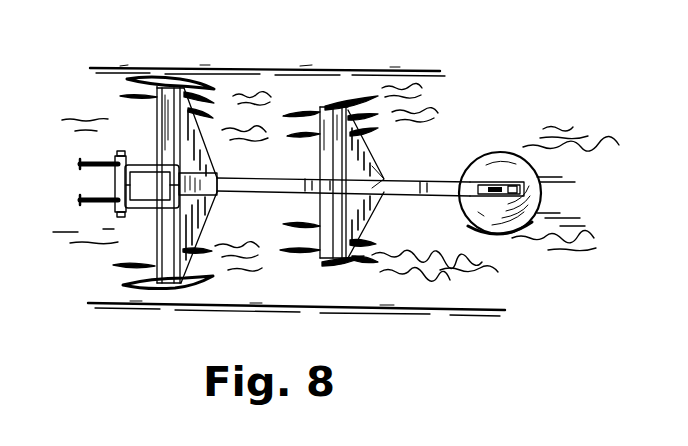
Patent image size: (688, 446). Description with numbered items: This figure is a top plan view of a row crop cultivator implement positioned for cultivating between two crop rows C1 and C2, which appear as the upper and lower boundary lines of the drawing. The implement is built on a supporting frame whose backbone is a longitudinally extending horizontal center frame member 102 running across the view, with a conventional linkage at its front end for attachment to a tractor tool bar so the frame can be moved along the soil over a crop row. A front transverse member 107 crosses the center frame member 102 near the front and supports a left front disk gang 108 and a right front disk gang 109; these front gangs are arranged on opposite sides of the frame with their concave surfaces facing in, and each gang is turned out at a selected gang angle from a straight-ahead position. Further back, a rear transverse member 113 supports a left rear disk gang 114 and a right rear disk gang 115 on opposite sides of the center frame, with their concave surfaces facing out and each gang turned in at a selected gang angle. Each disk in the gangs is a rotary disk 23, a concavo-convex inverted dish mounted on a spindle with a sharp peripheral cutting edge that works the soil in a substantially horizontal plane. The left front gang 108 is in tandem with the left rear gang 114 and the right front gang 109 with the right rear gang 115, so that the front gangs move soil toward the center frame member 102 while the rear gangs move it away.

The center frame member 102 is at (290, 176).
The front transverse member 107 is at (188, 138).
The left front disk gang 108 is at (132, 262).
The right front disk gang 109 is at (158, 80).
The rear transverse member 113 is at (362, 160).
The left rear disk gang 114 is at (352, 265).
The right rear disk gang 115 is at (345, 108).
The rotary disk 23 is at (540, 184).
The crop row C1 is at (352, 307).
The crop row C2 is at (440, 70).